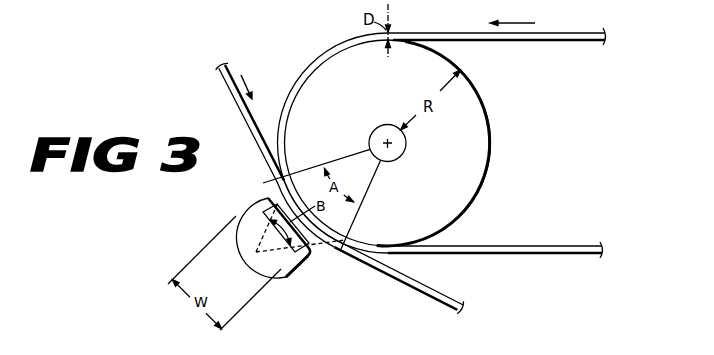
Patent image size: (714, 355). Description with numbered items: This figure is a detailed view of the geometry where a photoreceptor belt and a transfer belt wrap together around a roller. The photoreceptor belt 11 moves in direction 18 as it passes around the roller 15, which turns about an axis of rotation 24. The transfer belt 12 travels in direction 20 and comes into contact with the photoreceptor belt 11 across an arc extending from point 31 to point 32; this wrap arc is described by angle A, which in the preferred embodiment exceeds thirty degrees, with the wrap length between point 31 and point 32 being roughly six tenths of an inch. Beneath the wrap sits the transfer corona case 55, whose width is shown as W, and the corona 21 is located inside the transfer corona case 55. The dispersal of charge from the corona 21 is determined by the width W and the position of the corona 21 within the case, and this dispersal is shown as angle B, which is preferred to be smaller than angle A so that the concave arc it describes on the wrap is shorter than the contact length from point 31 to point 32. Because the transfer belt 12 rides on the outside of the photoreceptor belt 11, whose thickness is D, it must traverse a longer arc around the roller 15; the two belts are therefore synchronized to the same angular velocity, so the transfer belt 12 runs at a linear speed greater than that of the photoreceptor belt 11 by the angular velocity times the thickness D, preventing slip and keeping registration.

The photoreceptor belt 11 is at (592, 32).
The transfer belt 12 is at (229, 89).
The roller 15 is at (490, 151).
The direction of belt 11 18 is at (513, 22).
The direction of belt 12 20 is at (232, 77).
The corona 21 is at (245, 262).
The axis of rotation 24 is at (390, 152).
The point 31 is at (309, 169).
The point 32 is at (361, 221).
The transfer corona case 55 is at (288, 268).